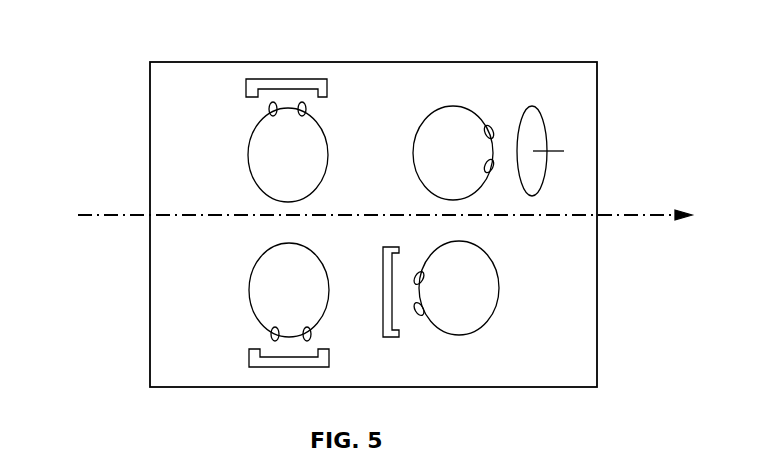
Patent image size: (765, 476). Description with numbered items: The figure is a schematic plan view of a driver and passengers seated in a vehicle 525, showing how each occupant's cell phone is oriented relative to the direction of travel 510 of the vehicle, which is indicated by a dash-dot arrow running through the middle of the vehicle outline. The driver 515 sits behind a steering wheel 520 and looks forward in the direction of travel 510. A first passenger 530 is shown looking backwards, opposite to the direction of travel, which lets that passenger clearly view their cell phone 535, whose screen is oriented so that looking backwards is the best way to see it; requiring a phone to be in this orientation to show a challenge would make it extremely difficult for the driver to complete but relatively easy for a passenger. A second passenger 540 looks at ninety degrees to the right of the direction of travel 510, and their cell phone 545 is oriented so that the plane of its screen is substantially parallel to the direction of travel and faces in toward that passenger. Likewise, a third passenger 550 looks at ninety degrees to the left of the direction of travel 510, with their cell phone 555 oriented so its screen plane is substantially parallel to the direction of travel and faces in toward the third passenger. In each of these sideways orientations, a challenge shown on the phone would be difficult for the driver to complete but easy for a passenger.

The direction of travel 510 is at (612, 215).
The driver 515 is at (453, 106).
The steering wheel 520 is at (547, 129).
The vehicle 525 is at (150, 341).
The first passenger 530 is at (499, 290).
The cell phone 535 is at (395, 337).
The second passenger 540 is at (249, 290).
The cell phone 545 is at (272, 368).
The third passenger 550 is at (248, 157).
The cell phone 555 is at (250, 79).